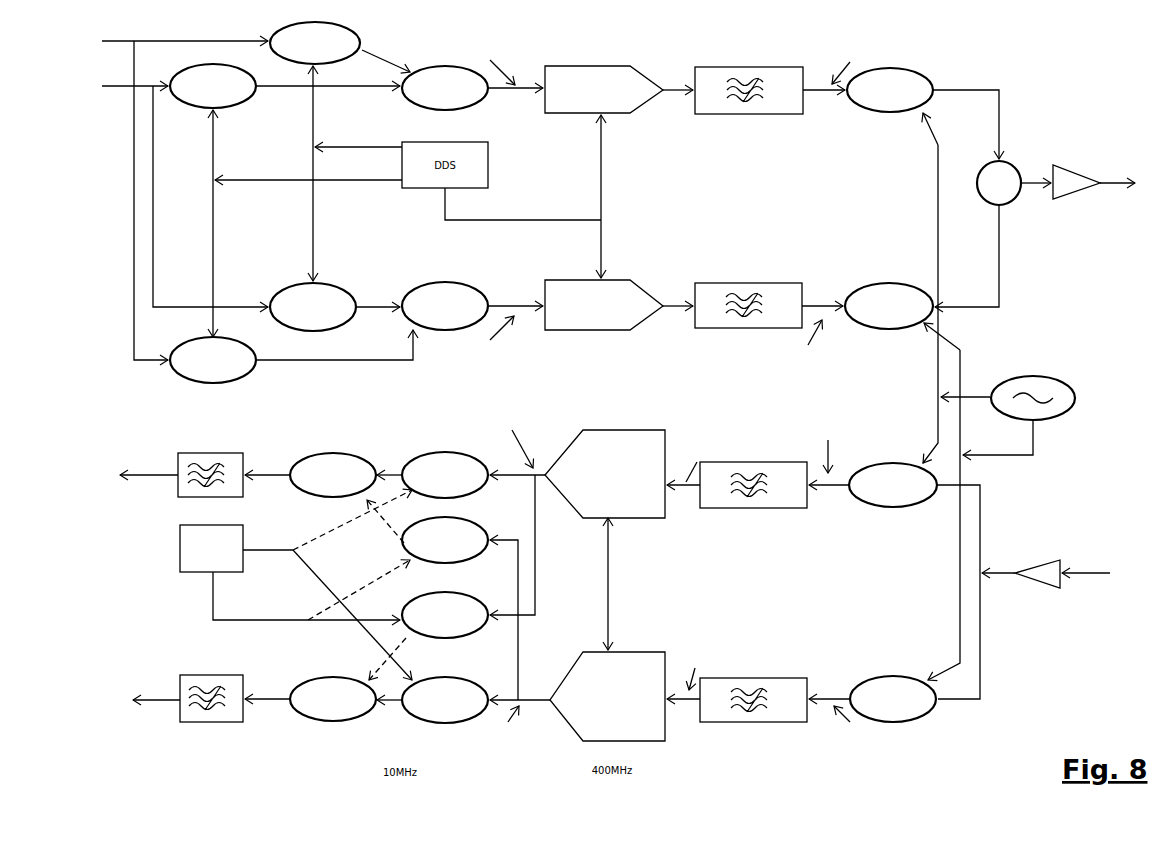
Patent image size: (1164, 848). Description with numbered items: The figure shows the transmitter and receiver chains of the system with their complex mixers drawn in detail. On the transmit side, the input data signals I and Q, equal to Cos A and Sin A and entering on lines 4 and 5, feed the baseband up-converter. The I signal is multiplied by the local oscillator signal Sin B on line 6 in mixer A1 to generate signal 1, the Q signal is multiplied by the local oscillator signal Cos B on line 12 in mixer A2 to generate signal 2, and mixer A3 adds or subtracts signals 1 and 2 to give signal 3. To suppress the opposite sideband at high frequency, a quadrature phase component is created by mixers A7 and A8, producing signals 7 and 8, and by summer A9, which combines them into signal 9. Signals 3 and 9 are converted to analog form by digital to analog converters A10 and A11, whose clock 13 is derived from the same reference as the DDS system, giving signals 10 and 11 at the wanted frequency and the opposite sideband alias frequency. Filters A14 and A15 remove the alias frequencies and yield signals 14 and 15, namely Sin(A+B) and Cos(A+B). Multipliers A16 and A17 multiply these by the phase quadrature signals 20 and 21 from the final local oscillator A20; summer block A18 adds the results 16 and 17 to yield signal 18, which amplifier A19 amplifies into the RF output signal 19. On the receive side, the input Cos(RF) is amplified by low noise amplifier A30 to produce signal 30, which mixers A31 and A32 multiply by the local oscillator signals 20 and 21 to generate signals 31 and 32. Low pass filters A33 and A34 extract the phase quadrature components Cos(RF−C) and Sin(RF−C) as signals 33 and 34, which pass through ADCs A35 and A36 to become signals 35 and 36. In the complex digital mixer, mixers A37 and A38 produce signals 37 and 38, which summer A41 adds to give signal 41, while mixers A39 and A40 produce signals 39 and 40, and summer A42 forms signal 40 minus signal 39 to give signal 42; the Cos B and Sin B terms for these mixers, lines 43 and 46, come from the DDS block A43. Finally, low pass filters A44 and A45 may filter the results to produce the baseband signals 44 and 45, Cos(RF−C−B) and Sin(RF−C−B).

The multiplier A1 is at (213, 86).
The mixer A2 is at (315, 37).
The mixer A3 is at (445, 88).
The mixer A7 is at (213, 360).
The mixer A8 is at (313, 302).
The summer A9 is at (443, 298).
The digital to analog converter A10 is at (604, 75).
The digital to analog converter A11 is at (604, 319).
The filter A14 is at (749, 107).
The filter A15 is at (748, 287).
The multiplier A16 is at (893, 78).
The multiplier A17 is at (889, 320).
The summer block A18 is at (988, 193).
The amplifier A19 is at (1077, 166).
The final local oscillator A20 is at (1033, 382).
The low noise amplifier A30 is at (1039, 558).
The mixer A31 is at (893, 466).
The mixer A32 is at (893, 681).
The low pass filter A33 is at (753, 466).
The low pass filter A34 is at (753, 694).
The ADC A35 is at (605, 474).
The ADC A36 is at (607, 696).
The mixer A37 is at (445, 456).
The mixer A38 is at (454, 545).
The mixer A39 is at (453, 619).
The mixer A40 is at (445, 715).
The summer A41 is at (337, 462).
The summer A42 is at (341, 713).
The direct digital synthesizer A43 is at (185, 548).
The low pass filter A44 is at (228, 484).
The low pass filter A45 is at (211, 683).
The signal 1 is at (276, 196).
The signal 2 is at (386, 57).
The signal 3 is at (506, 82).
The I=CosA input 4 is at (99, 200).
The Q=SinA input 5 is at (185, 27).
The SinB signal 6 is at (281, 223).
The signal 7 is at (385, 340).
The signal 8 is at (378, 299).
The signal 9 is at (515, 292).
The signal 10 is at (678, 77).
The signal 11 is at (675, 290).
The CosB signal 12 is at (341, 173).
The clock 13 is at (539, 196).
The signal 14 is at (833, 81).
The signal 15 is at (782, 322).
The signal 16 is at (970, 110).
The signal 17 is at (985, 256).
The signal 18 is at (1035, 198).
The RF output signal 19 is at (1117, 168).
The phase quadrature signal 20 is at (923, 288).
The phase quadrature signal 21 is at (939, 501).
The signal 30 is at (1027, 592).
The signal 31 is at (813, 470).
The signal 32 is at (849, 704).
The signal 33 is at (707, 476).
The signal 34 is at (699, 685).
The signal 35 is at (536, 528).
The signal 36 is at (520, 646).
The signal 37 is at (389, 437).
The signal 38 is at (390, 521).
The signal 39 is at (399, 658).
The signal 40 is at (394, 715).
The signal 41 is at (267, 461).
The signal 42 is at (267, 679).
The CosB signal 43 is at (327, 585).
The baseband signal 44 is at (149, 470).
The baseband signal 45 is at (177, 705).
The SinB signal 46 is at (297, 590).